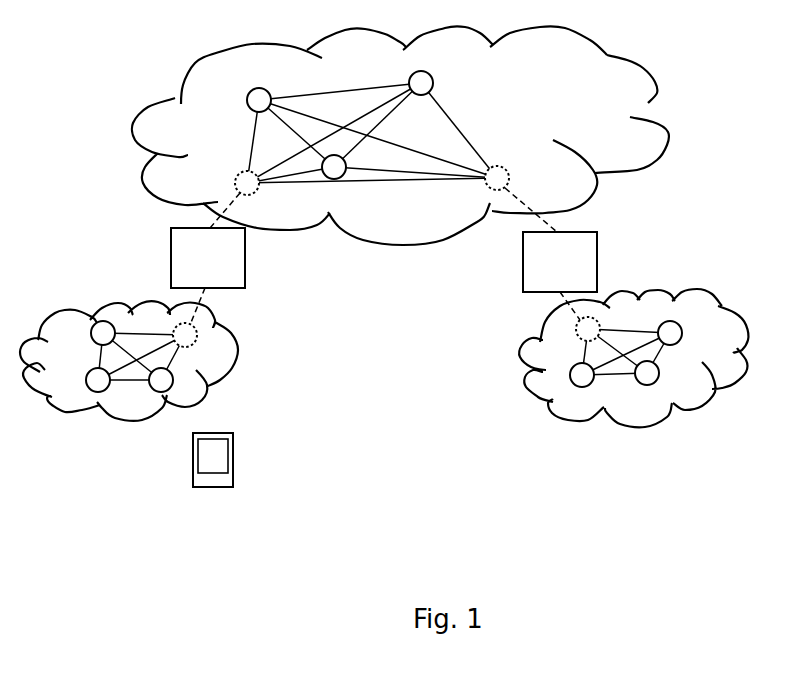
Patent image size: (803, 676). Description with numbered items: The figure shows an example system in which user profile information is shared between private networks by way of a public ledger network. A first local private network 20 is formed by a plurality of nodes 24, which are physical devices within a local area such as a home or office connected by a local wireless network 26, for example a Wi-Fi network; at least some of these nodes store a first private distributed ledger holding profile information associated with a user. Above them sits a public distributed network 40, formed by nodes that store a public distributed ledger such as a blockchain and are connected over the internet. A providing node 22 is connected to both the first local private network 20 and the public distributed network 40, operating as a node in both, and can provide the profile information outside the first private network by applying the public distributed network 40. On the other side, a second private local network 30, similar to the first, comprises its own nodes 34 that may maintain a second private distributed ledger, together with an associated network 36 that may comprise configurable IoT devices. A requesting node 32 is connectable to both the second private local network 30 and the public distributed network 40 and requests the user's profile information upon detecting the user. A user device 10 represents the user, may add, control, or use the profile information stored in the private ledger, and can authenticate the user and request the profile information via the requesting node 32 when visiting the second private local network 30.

The user device 10 is at (233, 477).
The first local private network 20 is at (208, 354).
The providing node 22 is at (182, 253).
The nodes 24 is at (97, 392).
The local wireless network 26 is at (155, 387).
The second private local network 30 is at (612, 398).
The requesting node 32 is at (583, 270).
The nodes 34 is at (580, 387).
The network 36 is at (648, 384).
The public distributed network 40 is at (366, 212).